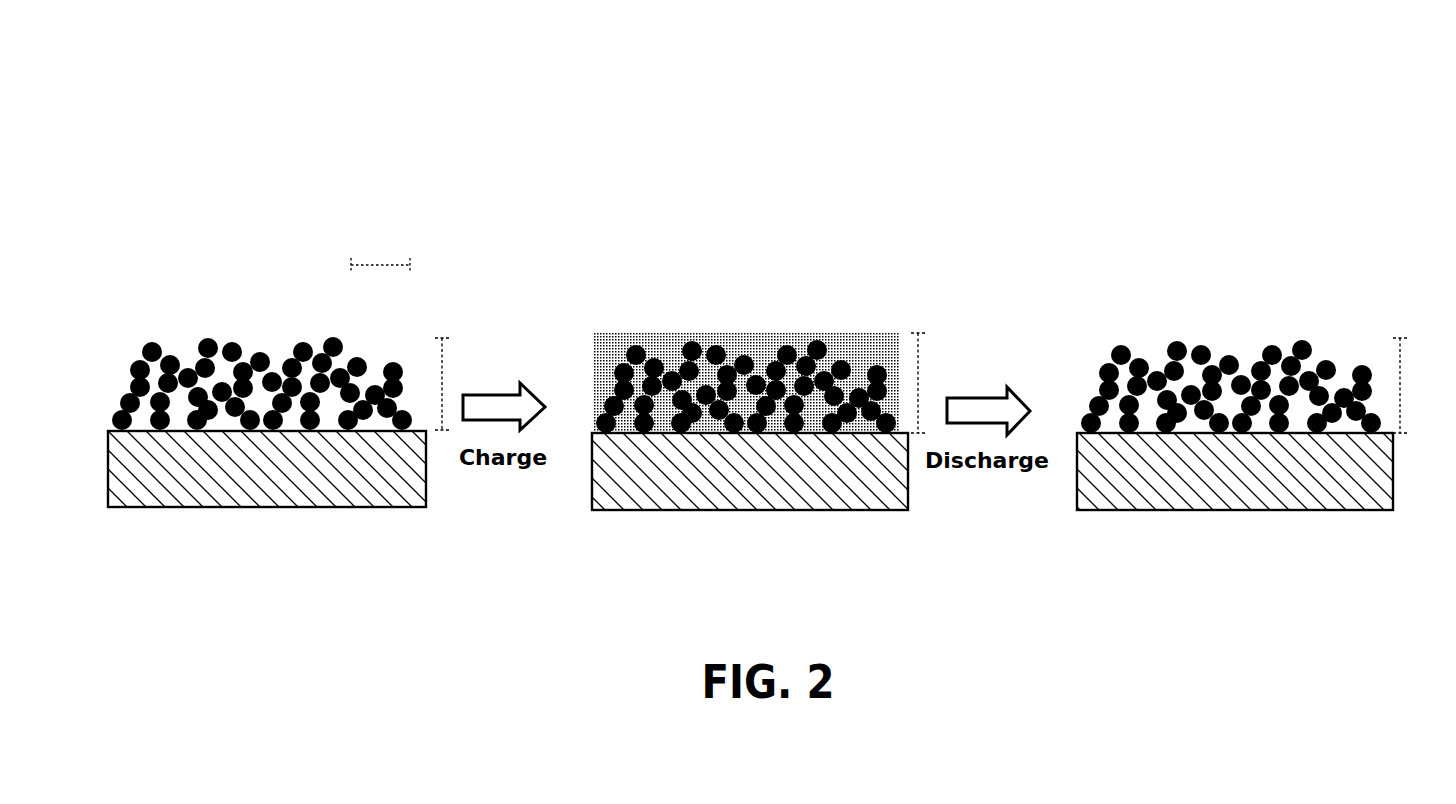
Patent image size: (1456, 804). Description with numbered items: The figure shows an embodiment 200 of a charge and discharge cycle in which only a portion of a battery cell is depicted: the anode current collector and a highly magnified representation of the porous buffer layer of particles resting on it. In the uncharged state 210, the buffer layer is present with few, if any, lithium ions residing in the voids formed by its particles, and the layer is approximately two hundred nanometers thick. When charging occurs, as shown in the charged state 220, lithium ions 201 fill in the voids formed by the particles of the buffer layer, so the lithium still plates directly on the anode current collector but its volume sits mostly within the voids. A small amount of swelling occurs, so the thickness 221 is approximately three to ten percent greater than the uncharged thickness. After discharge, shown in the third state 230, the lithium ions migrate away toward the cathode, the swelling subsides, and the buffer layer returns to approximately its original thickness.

The embodiment 200 is at (139, 103).
The uncharged state 210 is at (105, 296).
The charged state 220 is at (602, 293).
The electrode after discharge 230 is at (1072, 298).
The lithium ions 201 is at (840, 336).
The thickness 221 is at (918, 333).